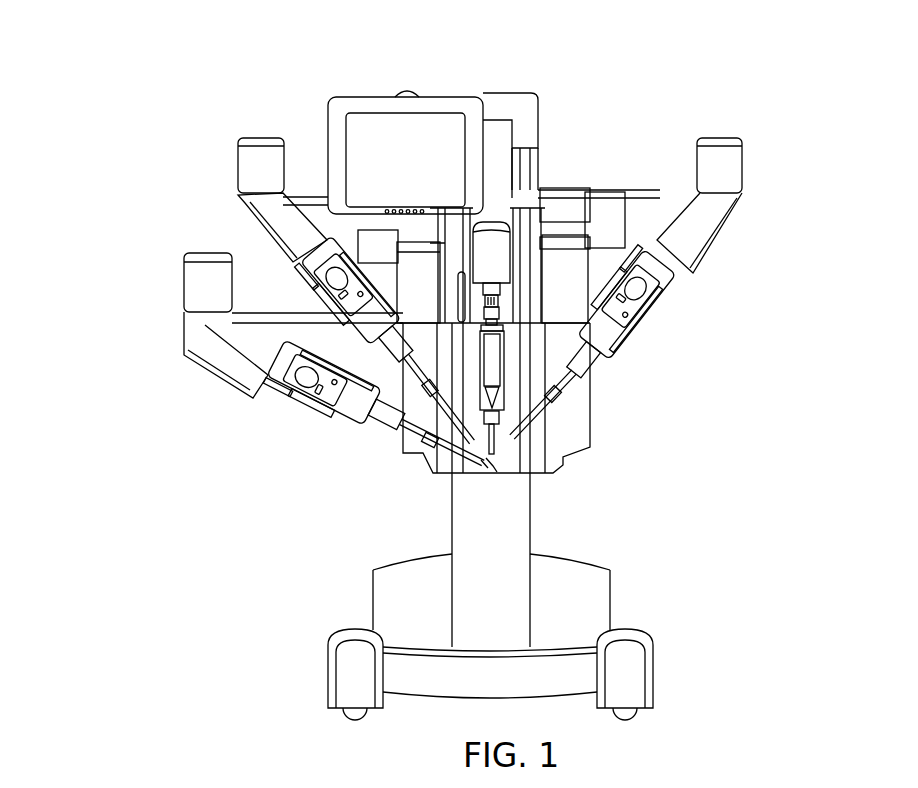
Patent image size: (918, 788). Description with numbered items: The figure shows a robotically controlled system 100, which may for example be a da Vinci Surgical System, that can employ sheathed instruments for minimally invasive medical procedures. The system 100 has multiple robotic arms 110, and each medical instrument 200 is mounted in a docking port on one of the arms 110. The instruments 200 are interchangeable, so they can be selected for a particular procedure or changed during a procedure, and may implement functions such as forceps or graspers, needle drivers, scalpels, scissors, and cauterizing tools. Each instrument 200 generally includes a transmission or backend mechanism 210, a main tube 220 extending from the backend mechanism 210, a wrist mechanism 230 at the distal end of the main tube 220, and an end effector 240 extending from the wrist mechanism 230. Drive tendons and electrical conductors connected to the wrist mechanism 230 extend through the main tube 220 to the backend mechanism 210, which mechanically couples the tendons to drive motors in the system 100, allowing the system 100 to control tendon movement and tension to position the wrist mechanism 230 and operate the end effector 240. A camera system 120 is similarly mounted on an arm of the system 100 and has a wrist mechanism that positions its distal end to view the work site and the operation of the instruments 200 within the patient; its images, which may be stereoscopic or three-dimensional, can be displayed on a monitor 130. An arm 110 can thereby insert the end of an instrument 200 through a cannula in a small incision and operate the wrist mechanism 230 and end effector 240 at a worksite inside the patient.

The robotically controlled system 100 is at (280, 78).
The robotic arm 110 is at (248, 227).
The camera system 120 is at (497, 447).
The monitor 130 is at (426, 173).
The medical instrument 200 is at (597, 375).
The backend mechanism 210 is at (313, 391).
The main tube 220 is at (362, 427).
The wrist mechanism 230 is at (478, 477).
The end effector 240 is at (487, 463).